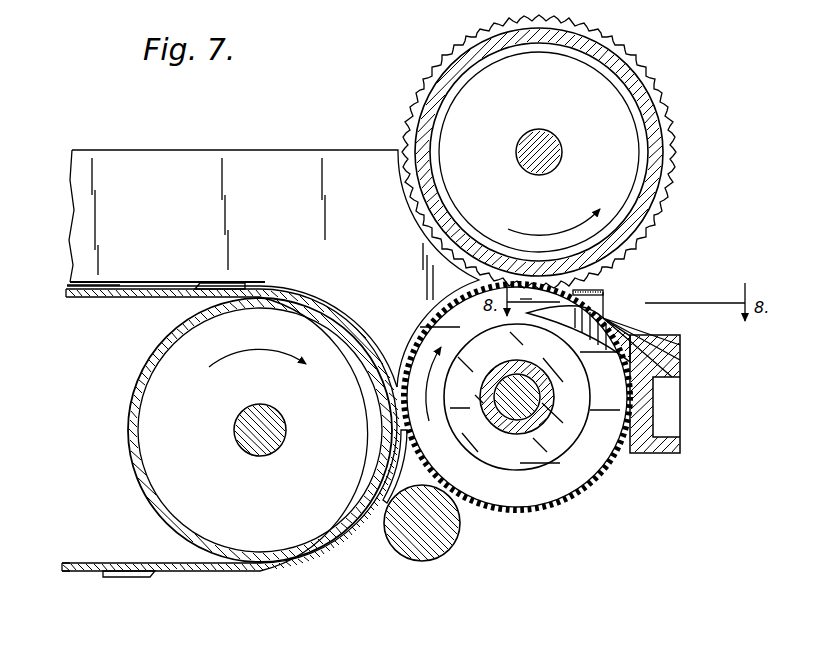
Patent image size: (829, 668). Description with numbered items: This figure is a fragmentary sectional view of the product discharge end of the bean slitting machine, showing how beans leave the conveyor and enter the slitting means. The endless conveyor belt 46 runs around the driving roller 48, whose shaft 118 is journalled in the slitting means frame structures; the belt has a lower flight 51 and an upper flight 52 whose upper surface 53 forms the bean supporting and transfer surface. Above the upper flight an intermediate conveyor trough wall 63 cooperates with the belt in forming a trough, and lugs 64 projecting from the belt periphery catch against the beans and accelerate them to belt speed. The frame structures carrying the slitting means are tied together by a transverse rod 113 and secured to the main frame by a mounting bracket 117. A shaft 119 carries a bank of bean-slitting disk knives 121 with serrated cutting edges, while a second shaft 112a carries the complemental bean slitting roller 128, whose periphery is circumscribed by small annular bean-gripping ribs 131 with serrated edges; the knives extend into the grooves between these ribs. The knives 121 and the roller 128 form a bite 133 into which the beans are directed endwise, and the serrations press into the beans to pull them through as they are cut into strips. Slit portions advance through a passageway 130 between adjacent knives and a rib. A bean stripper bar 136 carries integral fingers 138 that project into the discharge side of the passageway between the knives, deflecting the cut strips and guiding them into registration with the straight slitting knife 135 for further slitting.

The belt 46 is at (66, 284).
The driving roller 48 is at (262, 540).
The lower flight 51 is at (66, 573).
The upper flight 52 is at (92, 298).
The upper surface 53 is at (132, 287).
The intermediate wall 63 is at (177, 153).
The lugs 64 is at (240, 283).
The shaft 112a is at (541, 130).
The transverse rod 113 is at (413, 549).
The mounting bracket 117 is at (541, 406).
The shaft 118 is at (241, 444).
The shaft 119 is at (522, 418).
The disk knives 121 is at (556, 492).
The bean slitting roller 128 is at (627, 68).
The passageway 130 is at (528, 294).
The bean-gripping ribs 131 is at (472, 37).
The bite 133 is at (490, 286).
The straight slitting knife 135 is at (606, 291).
The bean stripper bar 136 is at (653, 405).
The fingers 138 is at (606, 320).